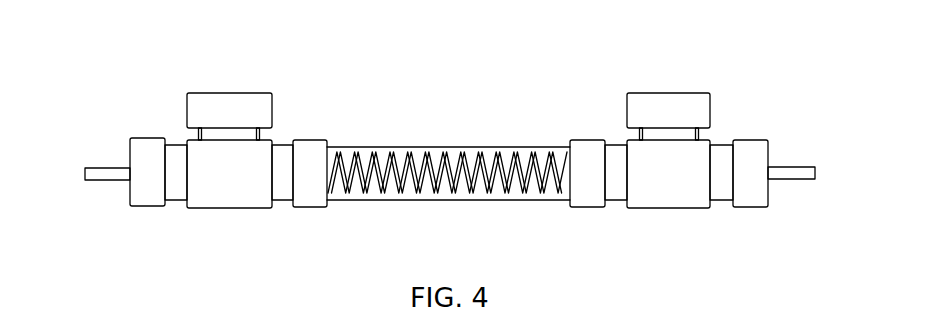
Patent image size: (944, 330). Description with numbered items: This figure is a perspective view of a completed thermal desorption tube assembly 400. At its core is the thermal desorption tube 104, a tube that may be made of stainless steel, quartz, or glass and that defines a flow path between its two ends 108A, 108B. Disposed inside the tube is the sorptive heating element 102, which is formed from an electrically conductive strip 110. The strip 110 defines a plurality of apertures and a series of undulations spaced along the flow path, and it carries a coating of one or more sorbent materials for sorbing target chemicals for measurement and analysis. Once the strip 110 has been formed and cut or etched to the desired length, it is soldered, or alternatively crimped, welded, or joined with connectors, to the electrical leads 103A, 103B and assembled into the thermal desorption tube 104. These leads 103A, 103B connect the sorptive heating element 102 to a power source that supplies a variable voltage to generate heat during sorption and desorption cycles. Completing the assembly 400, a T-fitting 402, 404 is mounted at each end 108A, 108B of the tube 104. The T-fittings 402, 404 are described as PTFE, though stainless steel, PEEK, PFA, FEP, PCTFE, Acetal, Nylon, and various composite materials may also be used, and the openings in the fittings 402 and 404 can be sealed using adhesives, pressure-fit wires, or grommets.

The thermal desorption tube assembly 400 is at (270, 75).
The T-fitting 402 is at (205, 155).
The T-fitting 404 is at (672, 163).
The electrical lead 103A is at (110, 168).
The electrical lead 103B is at (770, 168).
The end 108A is at (328, 172).
The end 108B is at (572, 165).
The electrically conductive strip 110 is at (390, 152).
The thermal desorption tube 104 is at (399, 200).
The sorptive heating element 102 is at (485, 177).